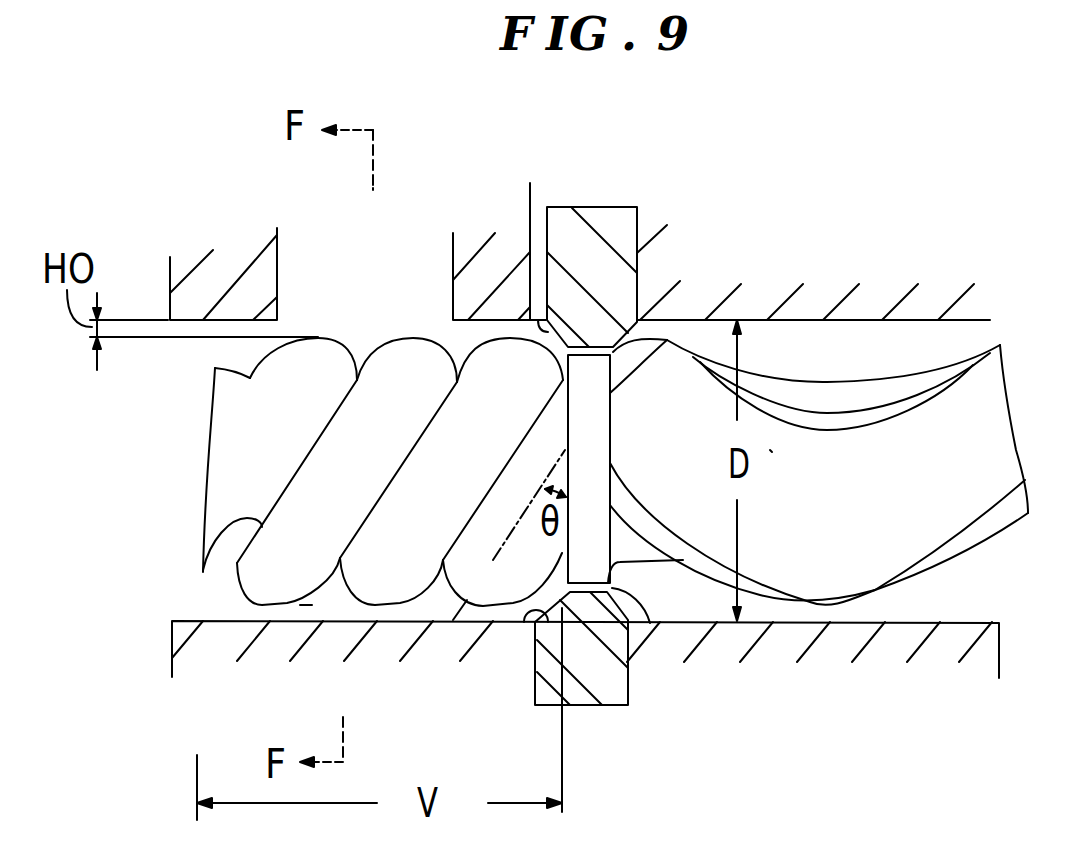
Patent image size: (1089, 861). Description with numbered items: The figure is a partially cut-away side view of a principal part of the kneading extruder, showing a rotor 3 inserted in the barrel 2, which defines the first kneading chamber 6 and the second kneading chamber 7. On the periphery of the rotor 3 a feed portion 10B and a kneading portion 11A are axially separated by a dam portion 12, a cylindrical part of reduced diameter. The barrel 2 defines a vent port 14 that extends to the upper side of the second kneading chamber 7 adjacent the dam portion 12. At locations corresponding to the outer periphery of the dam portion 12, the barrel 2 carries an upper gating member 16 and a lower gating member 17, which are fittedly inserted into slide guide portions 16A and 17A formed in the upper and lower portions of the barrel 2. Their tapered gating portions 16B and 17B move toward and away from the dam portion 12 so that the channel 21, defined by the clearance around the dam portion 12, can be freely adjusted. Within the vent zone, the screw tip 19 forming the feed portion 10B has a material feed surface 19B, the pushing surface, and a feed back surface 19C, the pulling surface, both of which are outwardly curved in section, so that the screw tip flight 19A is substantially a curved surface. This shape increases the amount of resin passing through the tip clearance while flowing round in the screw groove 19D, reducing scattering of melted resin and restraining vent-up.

The barrel 2 is at (230, 285).
The rotor 3 is at (922, 372).
The first kneading chamber 6 is at (875, 367).
The second kneading chamber 7 is at (233, 598).
The feed portion 10B is at (307, 600).
The kneading portion 11A is at (770, 450).
The dam portion 12 is at (670, 340).
The vent port 14 is at (372, 245).
The upper gating member 16 is at (583, 233).
The slide guide portion 16A is at (640, 230).
The gating portion 16B is at (506, 226).
The lower gating member 17 is at (590, 673).
The slide guide portion 17A is at (630, 673).
The gating portion 17B is at (525, 625).
The screw tip 19 is at (228, 476).
The screw tip flight 19A is at (253, 430).
The material feed surface 19B is at (277, 358).
The feed back surface 19C is at (447, 356).
The screw groove 19D is at (207, 537).
The channel 21 is at (660, 623).